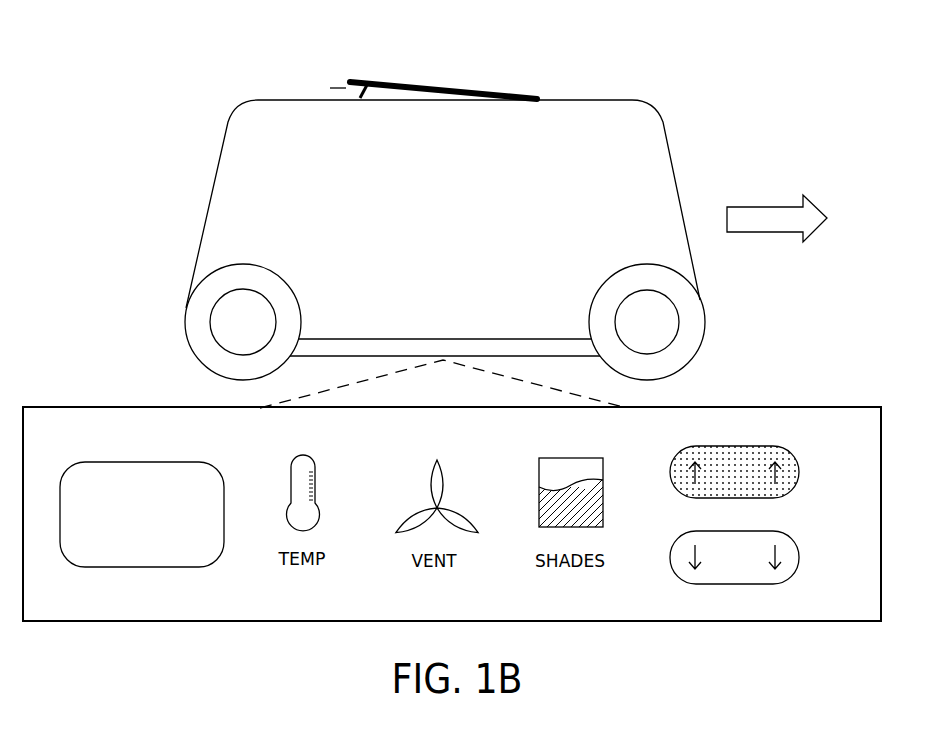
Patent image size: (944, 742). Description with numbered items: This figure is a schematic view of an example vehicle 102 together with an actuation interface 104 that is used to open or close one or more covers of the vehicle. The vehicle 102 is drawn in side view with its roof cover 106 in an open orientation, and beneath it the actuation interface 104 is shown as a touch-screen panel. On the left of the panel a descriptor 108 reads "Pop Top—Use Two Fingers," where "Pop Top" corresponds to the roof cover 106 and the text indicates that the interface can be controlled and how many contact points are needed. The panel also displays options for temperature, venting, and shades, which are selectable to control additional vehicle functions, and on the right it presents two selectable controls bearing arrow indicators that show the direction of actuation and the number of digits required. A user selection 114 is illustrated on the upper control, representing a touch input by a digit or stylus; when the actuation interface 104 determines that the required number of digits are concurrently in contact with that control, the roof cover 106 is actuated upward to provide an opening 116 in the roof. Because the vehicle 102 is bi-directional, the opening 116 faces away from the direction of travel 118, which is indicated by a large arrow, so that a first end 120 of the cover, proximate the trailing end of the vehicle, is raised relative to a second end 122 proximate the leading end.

The vehicle 102 is at (674, 151).
The actuation interface 104 is at (761, 383).
The roof cover 106 is at (462, 93).
The descriptor 108 is at (140, 567).
The selection 114 is at (727, 455).
The opening 116 is at (345, 89).
The direction of travel 118 is at (777, 218).
The first end 120 is at (357, 82).
The second end 122 is at (528, 97).